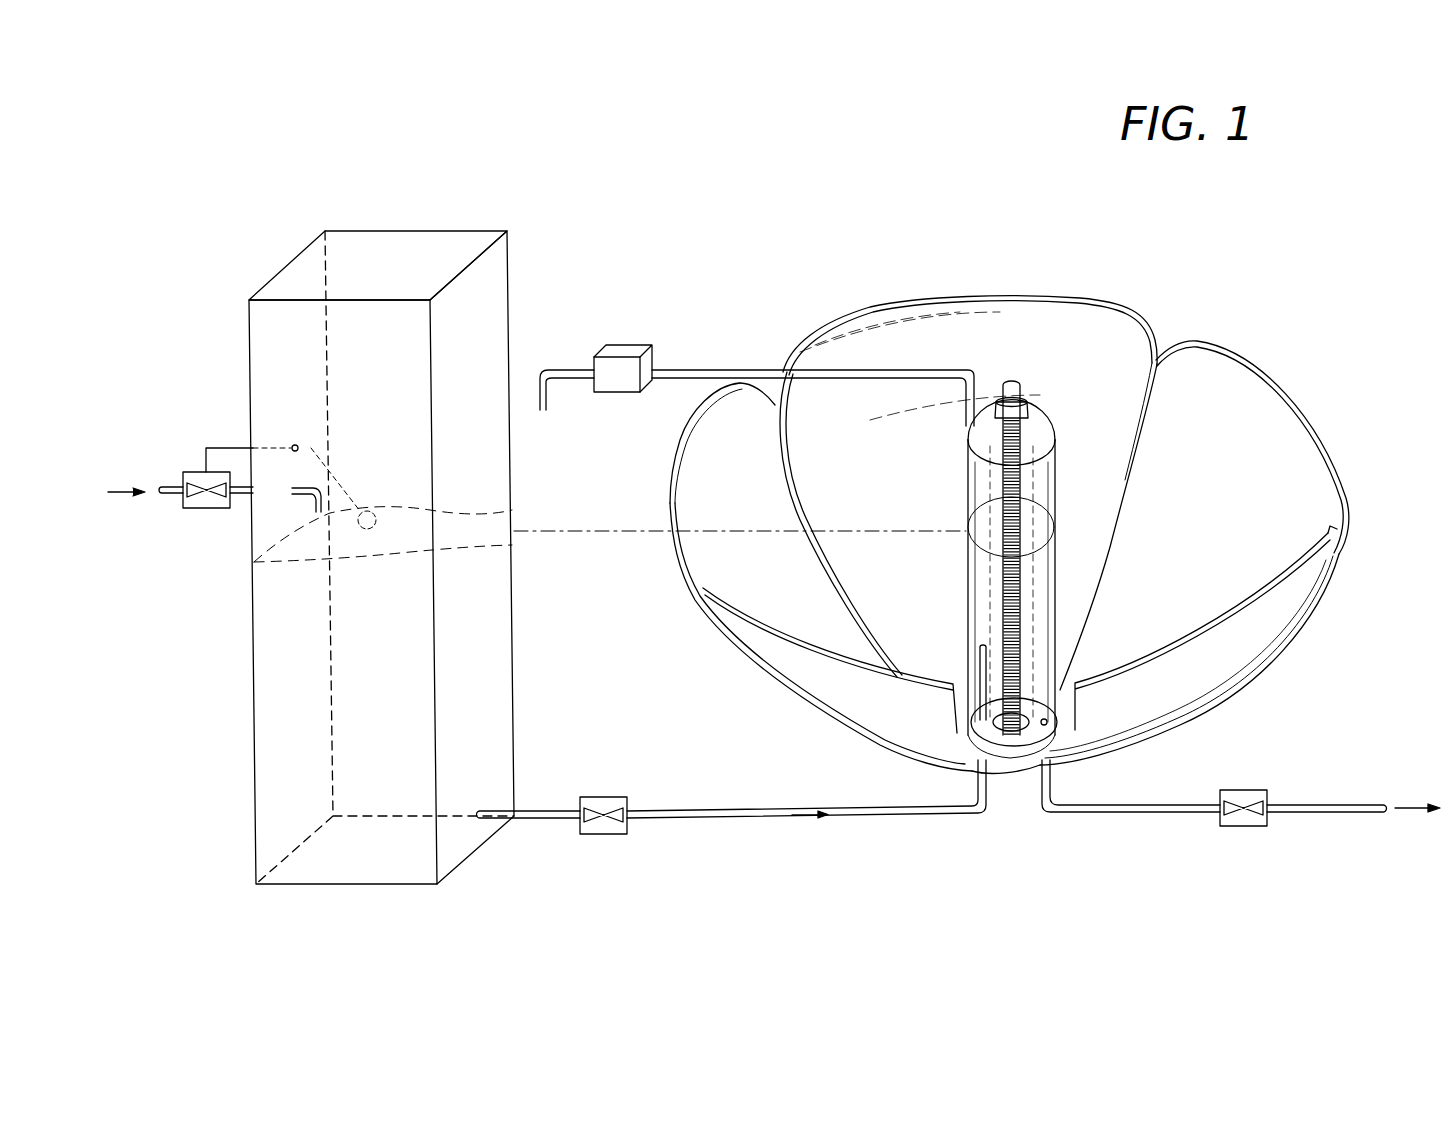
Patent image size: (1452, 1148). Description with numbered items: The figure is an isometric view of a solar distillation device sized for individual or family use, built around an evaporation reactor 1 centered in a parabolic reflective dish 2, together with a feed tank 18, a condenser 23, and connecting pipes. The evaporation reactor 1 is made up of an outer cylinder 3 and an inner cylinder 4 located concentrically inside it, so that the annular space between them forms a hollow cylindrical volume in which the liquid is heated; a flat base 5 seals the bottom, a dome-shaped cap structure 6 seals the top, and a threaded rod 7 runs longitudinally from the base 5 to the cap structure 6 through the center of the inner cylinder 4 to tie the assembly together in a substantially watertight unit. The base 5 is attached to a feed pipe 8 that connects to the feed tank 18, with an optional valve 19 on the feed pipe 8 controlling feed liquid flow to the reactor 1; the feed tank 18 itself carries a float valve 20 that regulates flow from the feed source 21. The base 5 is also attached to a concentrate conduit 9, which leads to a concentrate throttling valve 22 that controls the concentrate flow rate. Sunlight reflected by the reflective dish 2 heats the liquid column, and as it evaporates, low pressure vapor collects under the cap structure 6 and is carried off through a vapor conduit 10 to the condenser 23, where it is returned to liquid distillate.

The evaporation reactor 1 is at (1088, 400).
The parabolic reflective dish 2 is at (1199, 342).
The outer cylinder 3 is at (1057, 615).
The inner cylinder 4 is at (1033, 573).
The base 5 is at (975, 746).
The cap structure 6 is at (1046, 430).
The threaded rod 7 is at (1010, 382).
The feed pipe 8 is at (800, 820).
The concentrate conduit 9 is at (1137, 817).
The vapor conduit 10 is at (883, 370).
The feed tank 18 is at (413, 228).
The valve 19 is at (603, 836).
The float valve 20 is at (205, 509).
The feed source 21 is at (120, 490).
The concentrate throttling valve 22 is at (1243, 827).
The condenser 23 is at (624, 352).